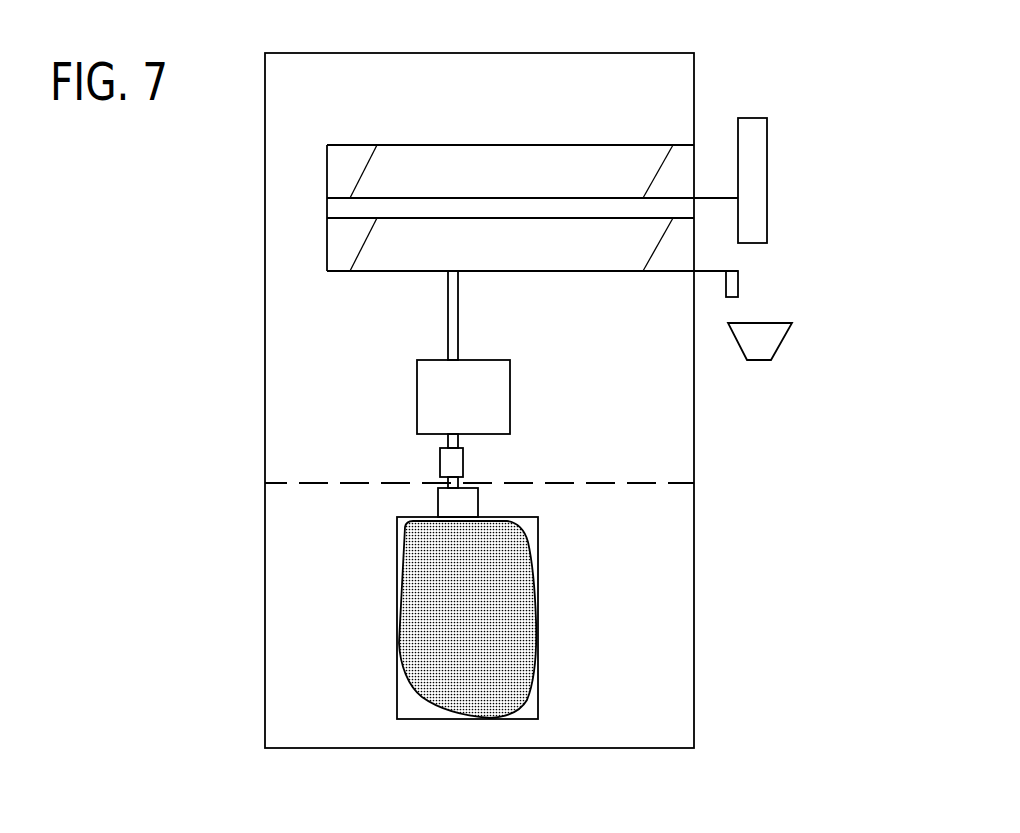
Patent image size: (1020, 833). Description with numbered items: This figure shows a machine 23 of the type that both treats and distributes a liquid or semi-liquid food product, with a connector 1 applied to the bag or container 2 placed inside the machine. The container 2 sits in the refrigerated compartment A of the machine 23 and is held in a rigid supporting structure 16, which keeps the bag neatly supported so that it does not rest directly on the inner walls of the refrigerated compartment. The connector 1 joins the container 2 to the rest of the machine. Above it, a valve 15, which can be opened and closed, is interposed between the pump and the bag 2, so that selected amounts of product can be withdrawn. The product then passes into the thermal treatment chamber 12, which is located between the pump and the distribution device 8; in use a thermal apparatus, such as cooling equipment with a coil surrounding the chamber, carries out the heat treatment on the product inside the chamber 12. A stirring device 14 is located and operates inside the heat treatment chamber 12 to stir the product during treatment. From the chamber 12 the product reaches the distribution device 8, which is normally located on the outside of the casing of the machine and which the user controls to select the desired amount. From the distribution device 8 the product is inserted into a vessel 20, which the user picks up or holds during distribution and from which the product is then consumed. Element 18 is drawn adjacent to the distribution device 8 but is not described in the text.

The connector 1 is at (470, 500).
The container 2 is at (498, 625).
The distribution device 8 is at (717, 252).
The thermal treatment chamber 12 is at (543, 167).
The stirring device 14 is at (353, 171).
The valve 15 is at (458, 460).
The rigid supporting structure 16 is at (398, 700).
The plate 18 is at (758, 147).
The vessel 20 is at (767, 343).
The machine 23 is at (282, 553).